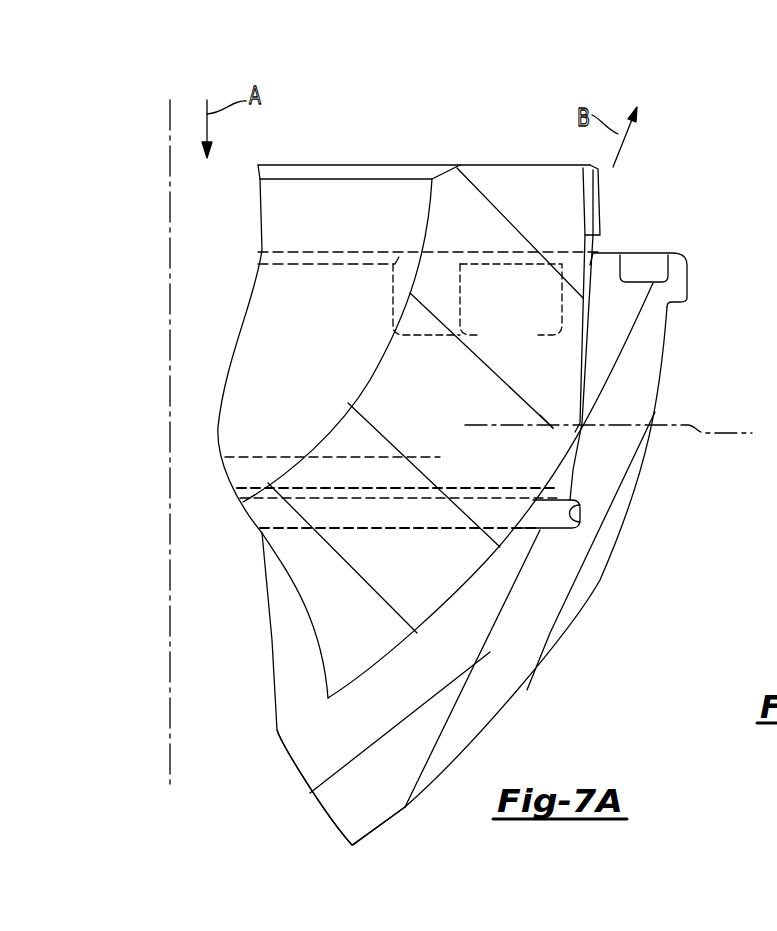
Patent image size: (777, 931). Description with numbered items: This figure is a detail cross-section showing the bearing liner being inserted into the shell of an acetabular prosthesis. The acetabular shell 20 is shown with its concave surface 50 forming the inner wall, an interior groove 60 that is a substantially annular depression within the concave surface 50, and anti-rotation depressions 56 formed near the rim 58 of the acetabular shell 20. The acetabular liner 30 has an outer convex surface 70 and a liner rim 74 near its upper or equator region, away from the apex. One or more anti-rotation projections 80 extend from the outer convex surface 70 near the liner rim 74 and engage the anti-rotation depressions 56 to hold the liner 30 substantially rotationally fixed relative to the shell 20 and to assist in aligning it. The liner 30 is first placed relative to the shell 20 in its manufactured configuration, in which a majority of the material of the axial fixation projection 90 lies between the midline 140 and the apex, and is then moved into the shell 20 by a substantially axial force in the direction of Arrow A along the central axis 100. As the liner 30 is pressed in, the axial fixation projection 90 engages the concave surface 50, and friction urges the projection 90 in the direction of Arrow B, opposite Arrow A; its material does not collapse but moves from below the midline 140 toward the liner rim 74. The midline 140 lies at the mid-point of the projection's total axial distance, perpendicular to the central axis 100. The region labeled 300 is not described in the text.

The acetabular shell 20 is at (655, 463).
The acetabular liner 30 is at (360, 197).
The concave surface 50 is at (333, 778).
The anti-rotation depressions 56 is at (422, 322).
The rim 58 is at (645, 267).
The interior groove 60 is at (580, 500).
The outer convex surface 70 is at (443, 612).
The liner rim 74 is at (520, 165).
The anti-rotation projections 80 is at (593, 185).
The axial fixation projection 90 is at (551, 431).
The central axis 100 is at (170, 125).
The midline 140 is at (621, 432).
The gap 300 is at (578, 396).